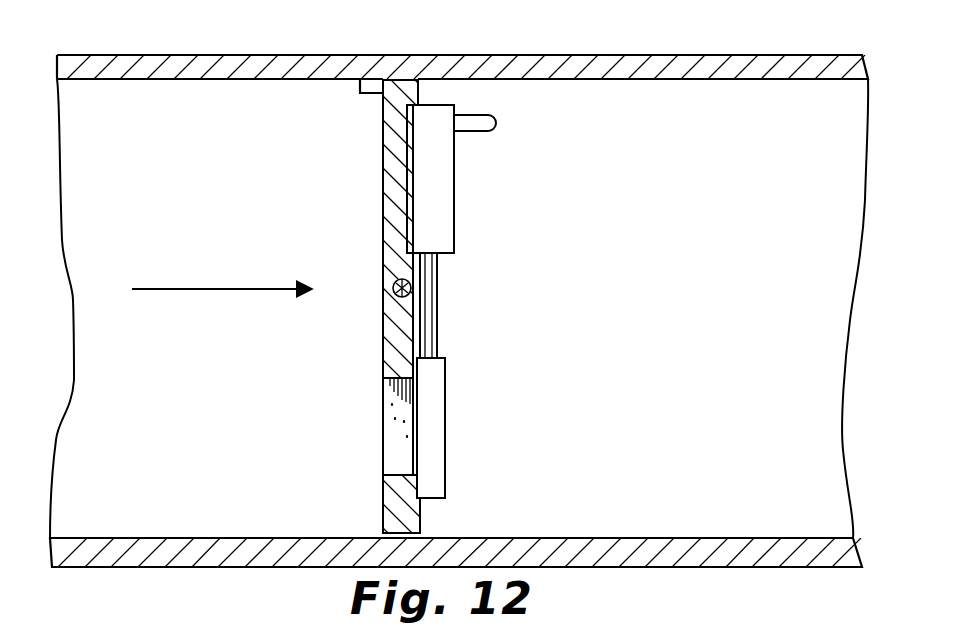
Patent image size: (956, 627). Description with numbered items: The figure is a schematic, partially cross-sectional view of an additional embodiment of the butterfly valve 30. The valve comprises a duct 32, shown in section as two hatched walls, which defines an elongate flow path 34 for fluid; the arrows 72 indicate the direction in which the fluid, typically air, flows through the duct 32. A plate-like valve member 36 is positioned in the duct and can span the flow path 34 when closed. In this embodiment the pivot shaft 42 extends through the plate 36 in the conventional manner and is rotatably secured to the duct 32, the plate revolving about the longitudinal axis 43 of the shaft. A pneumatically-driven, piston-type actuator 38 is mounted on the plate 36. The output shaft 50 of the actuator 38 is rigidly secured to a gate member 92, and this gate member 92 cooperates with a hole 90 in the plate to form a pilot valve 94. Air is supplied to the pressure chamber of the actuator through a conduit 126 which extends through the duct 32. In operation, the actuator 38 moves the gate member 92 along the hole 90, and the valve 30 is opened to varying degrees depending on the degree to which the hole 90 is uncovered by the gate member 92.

The butterfly valve 30 is at (262, 42).
The duct 32 is at (555, 55).
The flow path 34 is at (718, 293).
The plate-like valve member 36 is at (392, 203).
The actuator 38 is at (455, 203).
The pivot shaft 42 is at (392, 304).
The longitudinal axis 43 is at (394, 284).
The output shaft 50 is at (437, 310).
The arrows 72 is at (248, 260).
The hole 90 is at (396, 412).
The gate member 92 is at (446, 402).
The pilot valve 94 is at (377, 464).
The conduit 126 is at (478, 133).